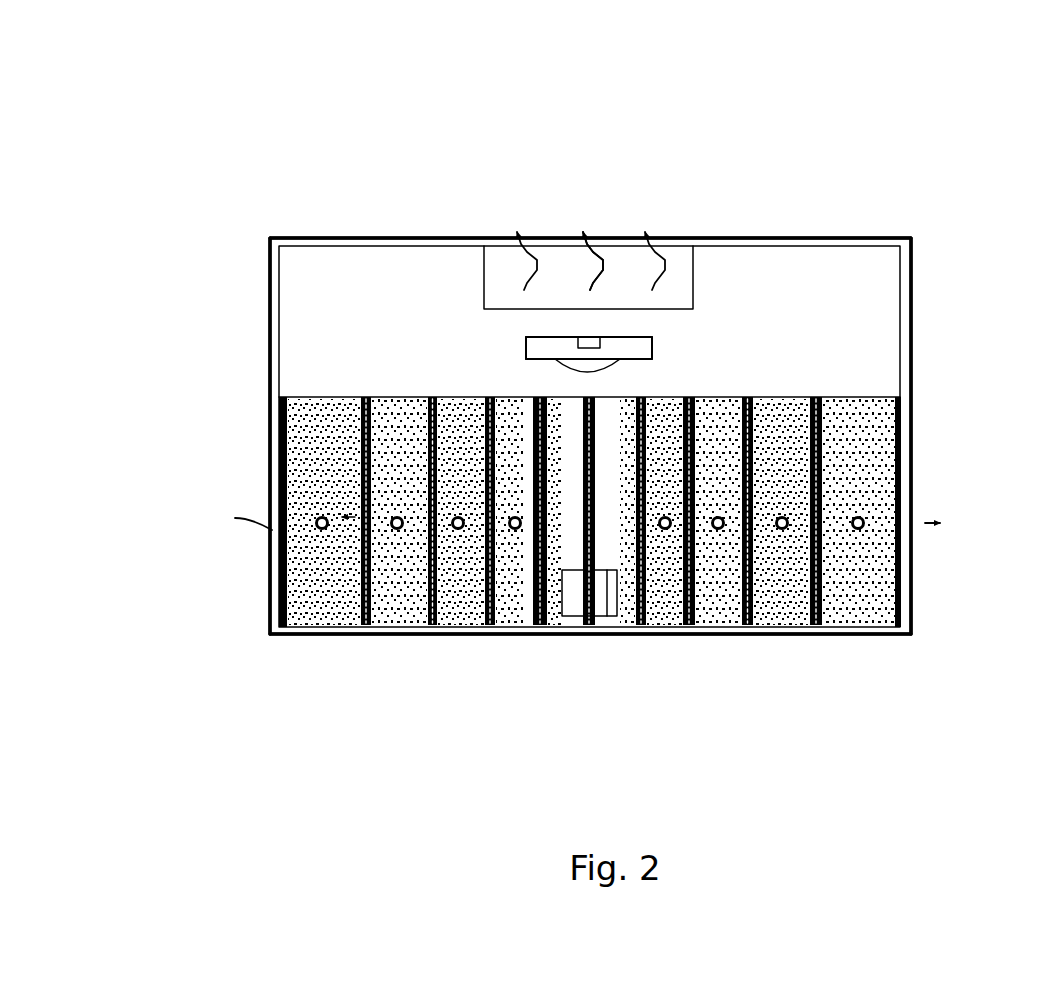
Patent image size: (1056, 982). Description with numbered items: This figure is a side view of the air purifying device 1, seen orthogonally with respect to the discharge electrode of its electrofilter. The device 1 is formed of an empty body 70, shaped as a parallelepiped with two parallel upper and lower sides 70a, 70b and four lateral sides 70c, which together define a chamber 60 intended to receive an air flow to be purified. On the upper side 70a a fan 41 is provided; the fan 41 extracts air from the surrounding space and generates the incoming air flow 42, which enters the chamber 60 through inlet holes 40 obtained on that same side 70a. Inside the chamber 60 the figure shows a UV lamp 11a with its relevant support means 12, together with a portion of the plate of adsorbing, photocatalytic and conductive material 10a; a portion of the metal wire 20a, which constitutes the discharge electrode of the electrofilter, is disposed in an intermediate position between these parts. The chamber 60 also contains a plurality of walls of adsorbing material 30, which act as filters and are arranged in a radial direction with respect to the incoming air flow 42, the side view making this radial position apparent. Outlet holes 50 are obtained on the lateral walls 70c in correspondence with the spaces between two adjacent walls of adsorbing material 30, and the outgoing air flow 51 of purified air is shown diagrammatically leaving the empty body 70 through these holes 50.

The device 1 is at (814, 174).
The empty body 70 is at (248, 322).
The upper side 70a is at (341, 230).
The lower side 70b is at (747, 642).
The lateral sides 70c is at (258, 400).
The chamber 60 is at (868, 340).
The fan 41 is at (676, 268).
The inlet holes 40 is at (510, 245).
The incoming air flow 42 is at (590, 228).
The support means 12 is at (590, 337).
The UV lamp 11a is at (547, 348).
The walls of adsorbing material 30 is at (333, 600).
The plate of adsorbing, photocatalytic and conductive material 10a is at (573, 613).
The metal wire 20a is at (605, 600).
The outlet holes 50 is at (782, 528).
The outgoing air flow 51 is at (905, 532).